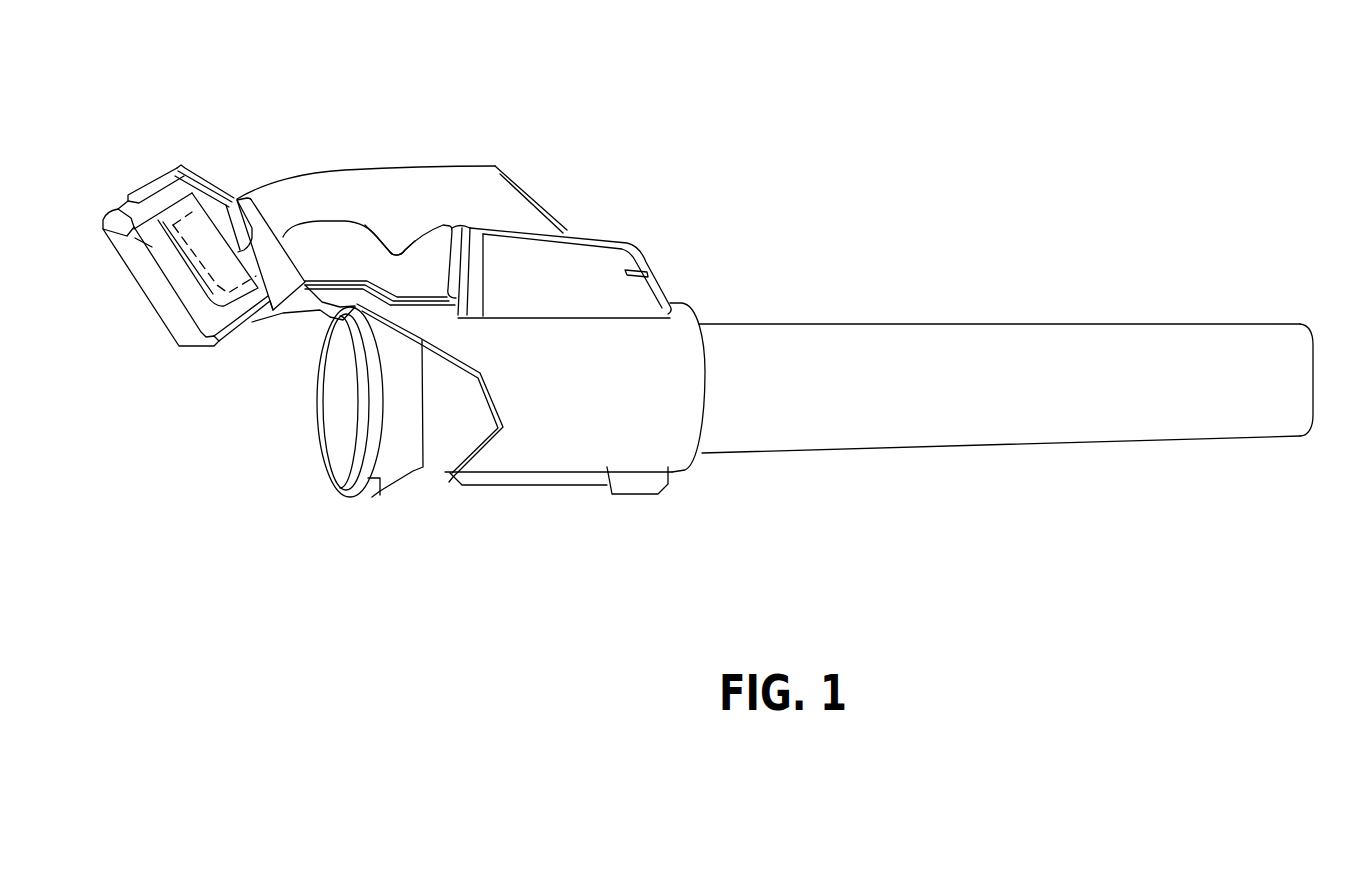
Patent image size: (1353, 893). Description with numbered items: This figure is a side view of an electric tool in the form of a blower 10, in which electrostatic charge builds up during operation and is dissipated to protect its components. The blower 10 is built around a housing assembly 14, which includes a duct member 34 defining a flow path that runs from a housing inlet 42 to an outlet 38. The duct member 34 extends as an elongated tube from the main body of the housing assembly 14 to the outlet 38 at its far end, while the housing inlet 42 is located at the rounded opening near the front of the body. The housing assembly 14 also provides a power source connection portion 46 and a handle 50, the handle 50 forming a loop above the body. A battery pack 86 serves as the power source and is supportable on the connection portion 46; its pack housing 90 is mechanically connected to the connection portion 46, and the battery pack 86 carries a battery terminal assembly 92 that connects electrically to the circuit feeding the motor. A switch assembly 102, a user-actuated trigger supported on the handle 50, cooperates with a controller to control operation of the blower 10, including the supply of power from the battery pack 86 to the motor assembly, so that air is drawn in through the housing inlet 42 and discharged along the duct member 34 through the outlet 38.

The blower 10 is at (703, 289).
The housing assembly 14 is at (590, 170).
The duct member 34 is at (1016, 345).
The outlet 38 is at (1305, 314).
The housing inlet 42 is at (268, 422).
The power source connection portion 46 is at (217, 190).
The handle 50 is at (402, 205).
The battery pack 86 is at (178, 190).
The pack housing 90 is at (188, 214).
The battery terminal assembly 92 is at (203, 273).
The switch assembly 102 is at (413, 227).